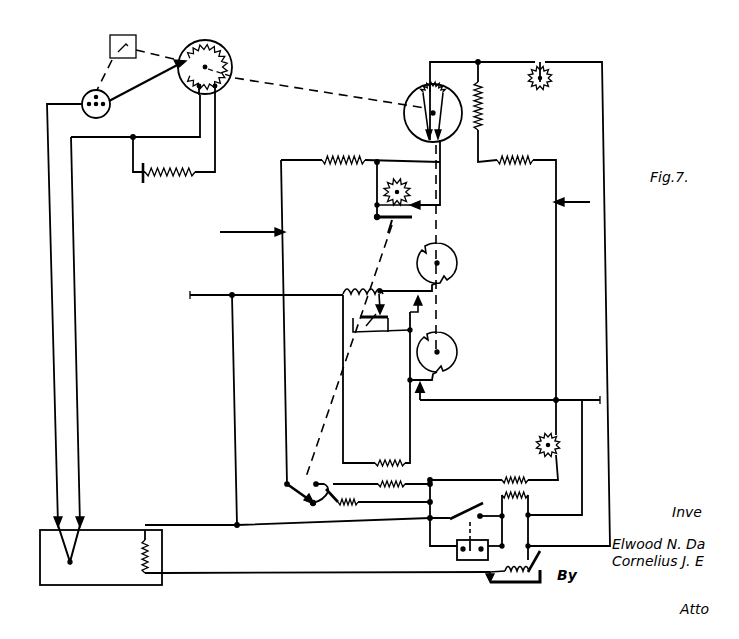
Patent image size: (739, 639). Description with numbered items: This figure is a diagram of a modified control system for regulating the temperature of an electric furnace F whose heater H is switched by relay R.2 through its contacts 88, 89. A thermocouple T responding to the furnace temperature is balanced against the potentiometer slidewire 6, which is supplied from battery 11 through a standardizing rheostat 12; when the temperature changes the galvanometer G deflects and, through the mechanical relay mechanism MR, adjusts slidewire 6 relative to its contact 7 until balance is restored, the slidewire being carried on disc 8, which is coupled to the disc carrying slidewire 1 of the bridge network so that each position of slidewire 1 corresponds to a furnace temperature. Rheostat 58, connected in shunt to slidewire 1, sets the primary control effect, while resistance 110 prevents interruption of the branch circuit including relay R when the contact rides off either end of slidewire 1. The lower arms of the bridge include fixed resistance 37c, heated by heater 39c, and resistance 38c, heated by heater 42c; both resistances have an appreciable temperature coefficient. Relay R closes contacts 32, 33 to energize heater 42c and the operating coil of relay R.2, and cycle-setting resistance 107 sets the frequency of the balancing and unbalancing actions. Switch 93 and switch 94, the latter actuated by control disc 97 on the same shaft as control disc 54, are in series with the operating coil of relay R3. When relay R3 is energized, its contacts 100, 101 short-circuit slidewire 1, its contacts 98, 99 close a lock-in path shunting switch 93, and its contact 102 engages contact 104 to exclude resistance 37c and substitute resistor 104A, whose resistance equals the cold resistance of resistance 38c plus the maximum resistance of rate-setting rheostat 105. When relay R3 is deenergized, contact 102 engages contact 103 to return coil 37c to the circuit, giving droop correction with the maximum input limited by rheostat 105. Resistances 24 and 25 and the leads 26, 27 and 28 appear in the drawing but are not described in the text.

The mechanical relay mechanism MR is at (136, 40).
The galvanometer G is at (82, 98).
The potentiometer slidewire 6 is at (214, 48).
The contact 7 is at (172, 70).
The disc 8 is at (232, 68).
The battery 11 is at (140, 180).
The rheostat 12 is at (182, 176).
The slidewire 1 is at (420, 100).
The resistance 110 is at (496, 106).
The cycle-setting resistance 107 is at (546, 90).
The resistor 25 is at (510, 158).
The terminal lead 27 is at (560, 201).
The resistor 24 is at (345, 165).
The rheostat 58 is at (405, 183).
The contact 101 is at (414, 210).
The contact 100 is at (385, 219).
The terminal lead 26 is at (280, 230).
The terminal lead 28 is at (197, 295).
The relay R3 is at (358, 288).
The contact 98 is at (380, 334).
The switch 93 is at (420, 288).
The contact 99 is at (425, 312).
The control disc 54 is at (455, 259).
The second control disc 97 is at (455, 350).
The switch 94 is at (425, 378).
The heater 39c is at (390, 461).
The rate-setting rheostat 105 is at (543, 433).
The resistance 38c is at (513, 478).
The contact 102 is at (293, 491).
The contact 103 is at (314, 506).
The contact 104 is at (318, 486).
The resistor 104A is at (336, 495).
The fixed resistance 37c is at (392, 488).
The contact 32 is at (468, 511).
The contact 33 is at (487, 501).
The heater 42c is at (522, 497).
The relay R is at (457, 543).
The relay R.2 is at (530, 561).
The contact 89 is at (488, 574).
The contact 88 is at (500, 584).
The thermocouple T is at (60, 532).
The furnace F is at (122, 548).
The heater H is at (150, 554).